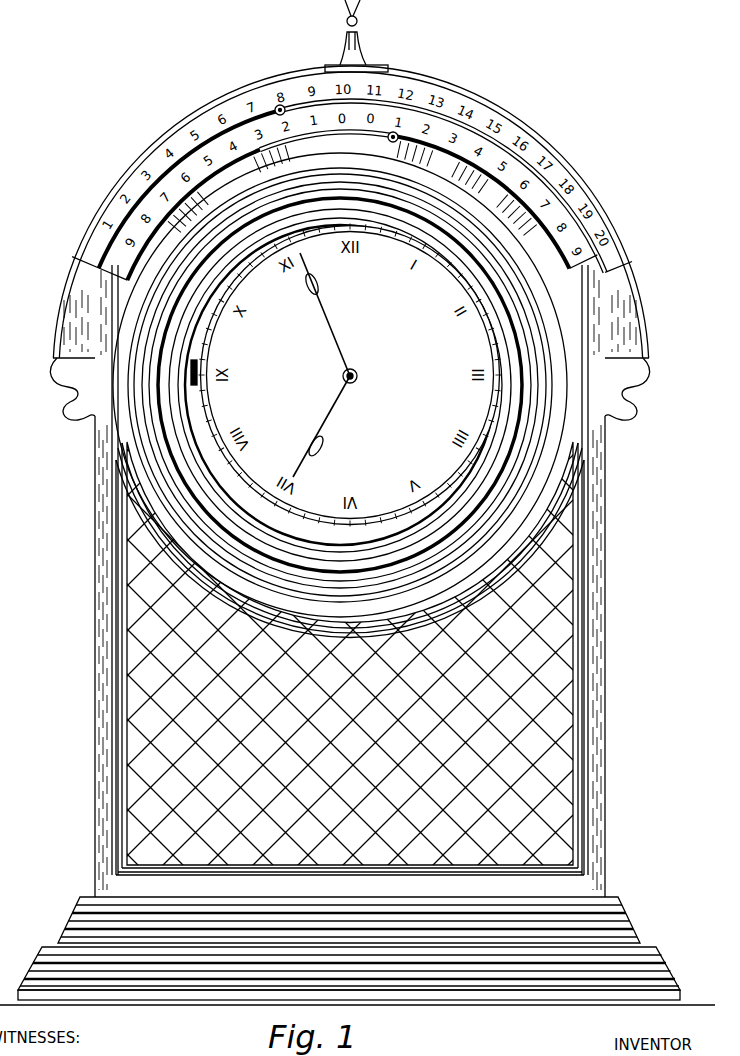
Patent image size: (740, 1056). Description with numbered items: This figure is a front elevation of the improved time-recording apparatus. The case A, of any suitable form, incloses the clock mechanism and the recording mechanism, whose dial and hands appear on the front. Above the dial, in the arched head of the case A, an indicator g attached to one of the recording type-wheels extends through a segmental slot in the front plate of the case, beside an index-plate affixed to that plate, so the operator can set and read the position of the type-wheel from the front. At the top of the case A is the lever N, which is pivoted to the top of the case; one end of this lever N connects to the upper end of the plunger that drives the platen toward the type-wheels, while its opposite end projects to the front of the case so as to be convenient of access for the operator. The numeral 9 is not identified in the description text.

The lever N is at (357, 23).
The indicator g is at (281, 105).
The case A is at (160, 596).
The clock case 9 is at (647, 795).